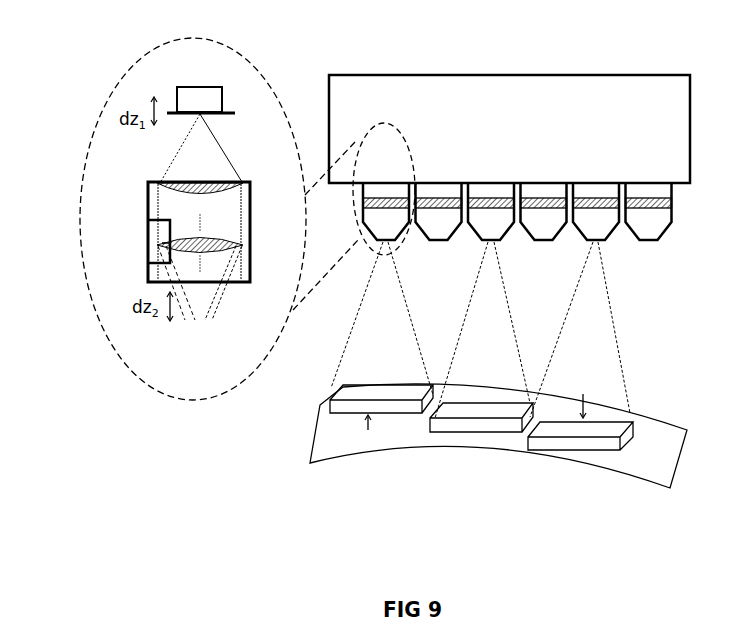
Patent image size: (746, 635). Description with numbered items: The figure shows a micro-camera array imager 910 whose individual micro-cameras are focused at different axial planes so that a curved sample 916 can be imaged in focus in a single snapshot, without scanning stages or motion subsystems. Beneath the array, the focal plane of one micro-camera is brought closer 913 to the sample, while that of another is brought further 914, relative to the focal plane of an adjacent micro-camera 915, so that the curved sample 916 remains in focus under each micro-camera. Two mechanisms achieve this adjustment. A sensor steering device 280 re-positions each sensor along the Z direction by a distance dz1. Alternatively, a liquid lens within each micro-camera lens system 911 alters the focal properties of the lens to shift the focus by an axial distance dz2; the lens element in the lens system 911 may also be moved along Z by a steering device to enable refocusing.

The sensor steering device 280 is at (178, 87).
The micro-camera lens system 911 is at (112, 248).
The micro-camera array imager 910 is at (509, 129).
The closer focal plane 913 is at (330, 405).
The focal plane of adjacent micro-camera 915 is at (440, 437).
The further focal plane 914 is at (553, 451).
The curved sample 916 is at (665, 486).